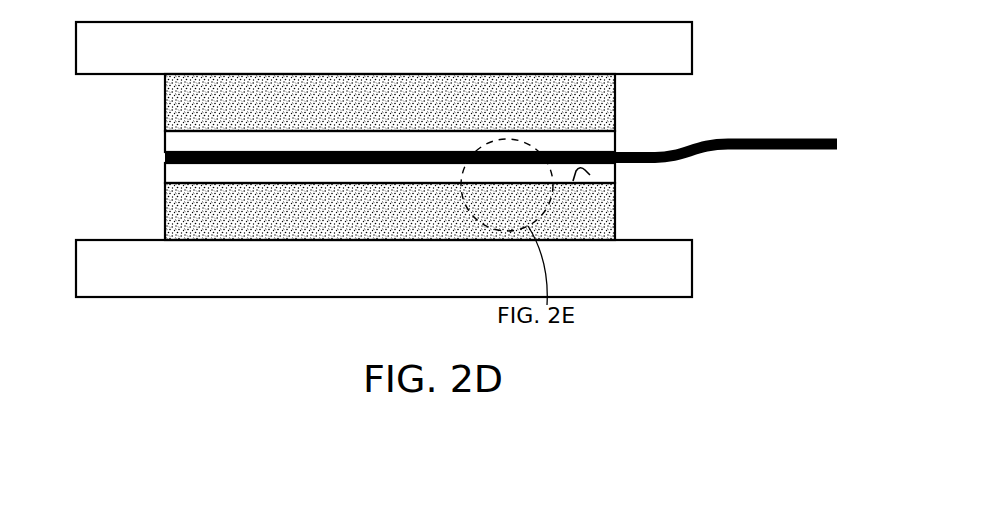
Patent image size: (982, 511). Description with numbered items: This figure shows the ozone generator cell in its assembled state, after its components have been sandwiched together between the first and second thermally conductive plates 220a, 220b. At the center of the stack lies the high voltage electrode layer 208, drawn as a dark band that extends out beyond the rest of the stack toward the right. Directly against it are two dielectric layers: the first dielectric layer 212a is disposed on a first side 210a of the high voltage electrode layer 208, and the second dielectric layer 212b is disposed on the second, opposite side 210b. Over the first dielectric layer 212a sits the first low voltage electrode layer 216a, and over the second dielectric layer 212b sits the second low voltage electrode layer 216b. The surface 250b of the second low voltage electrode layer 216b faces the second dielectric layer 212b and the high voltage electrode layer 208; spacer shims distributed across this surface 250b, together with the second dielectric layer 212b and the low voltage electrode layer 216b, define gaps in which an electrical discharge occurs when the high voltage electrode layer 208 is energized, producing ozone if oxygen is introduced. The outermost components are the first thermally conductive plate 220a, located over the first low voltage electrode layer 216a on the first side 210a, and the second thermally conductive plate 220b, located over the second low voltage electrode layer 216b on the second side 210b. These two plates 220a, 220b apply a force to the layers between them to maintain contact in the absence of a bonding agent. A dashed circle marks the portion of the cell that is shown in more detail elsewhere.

The high voltage electrode layer 208 is at (165, 158).
The first side 210a is at (399, 113).
The second side 210b is at (399, 201).
The first dielectric layer 212a is at (165, 138).
The second dielectric layer 212b is at (165, 178).
The first low voltage electrode layer 216a is at (165, 100).
The second low voltage electrode layer 216b is at (165, 215).
The first thermally conductive plate 220a is at (697, 50).
The second thermally conductive plate 220b is at (697, 268).
The surface 250b is at (590, 175).